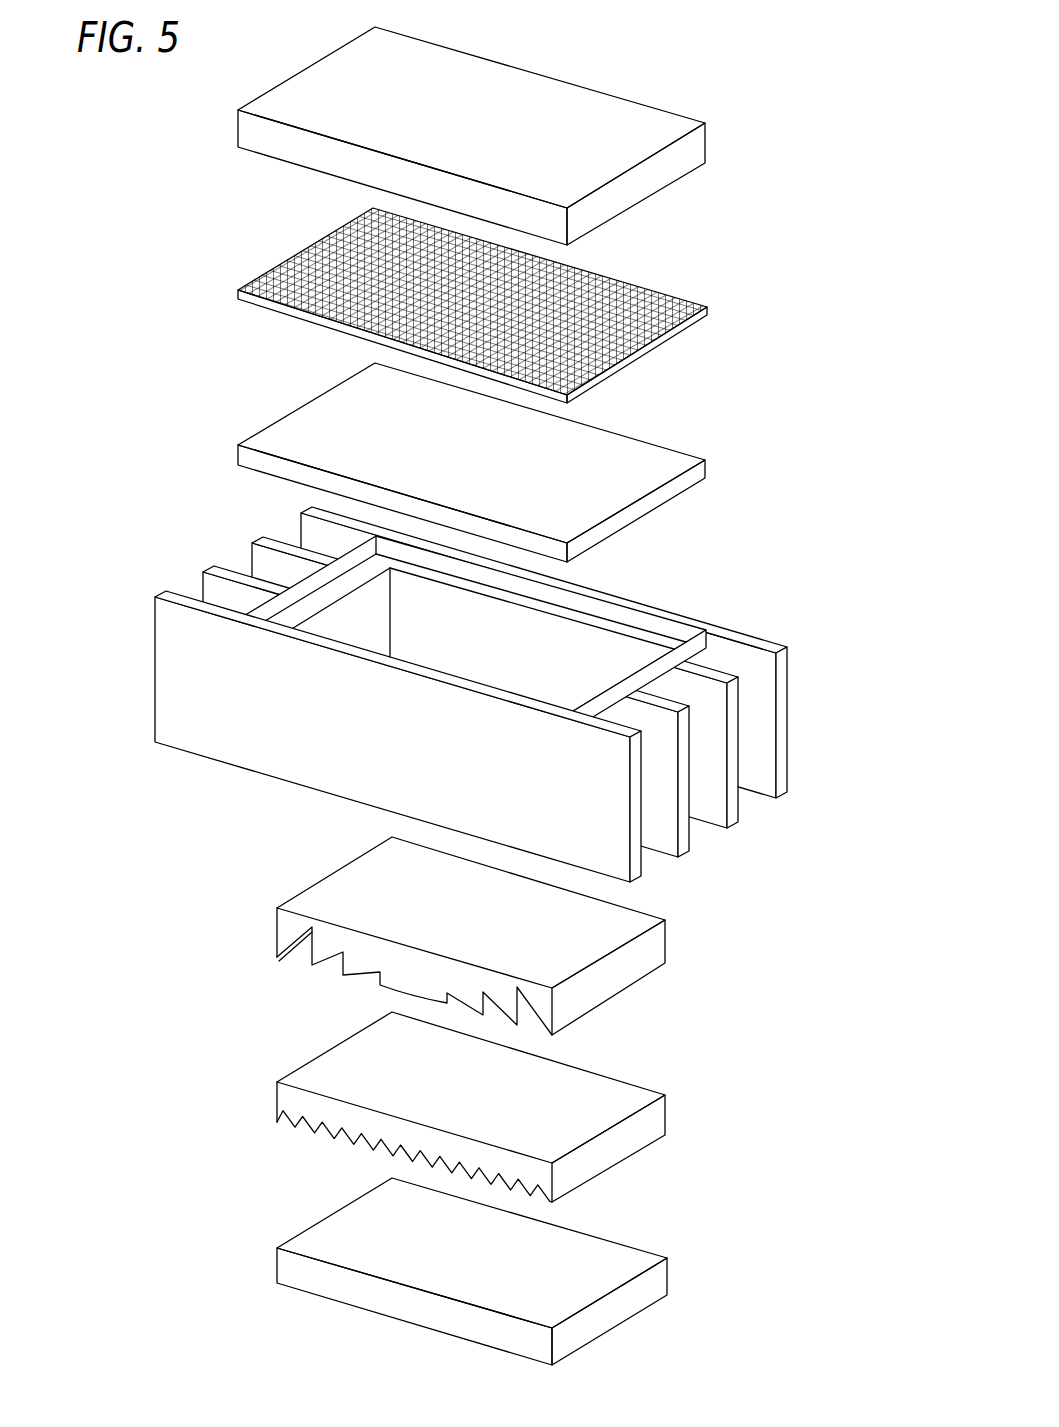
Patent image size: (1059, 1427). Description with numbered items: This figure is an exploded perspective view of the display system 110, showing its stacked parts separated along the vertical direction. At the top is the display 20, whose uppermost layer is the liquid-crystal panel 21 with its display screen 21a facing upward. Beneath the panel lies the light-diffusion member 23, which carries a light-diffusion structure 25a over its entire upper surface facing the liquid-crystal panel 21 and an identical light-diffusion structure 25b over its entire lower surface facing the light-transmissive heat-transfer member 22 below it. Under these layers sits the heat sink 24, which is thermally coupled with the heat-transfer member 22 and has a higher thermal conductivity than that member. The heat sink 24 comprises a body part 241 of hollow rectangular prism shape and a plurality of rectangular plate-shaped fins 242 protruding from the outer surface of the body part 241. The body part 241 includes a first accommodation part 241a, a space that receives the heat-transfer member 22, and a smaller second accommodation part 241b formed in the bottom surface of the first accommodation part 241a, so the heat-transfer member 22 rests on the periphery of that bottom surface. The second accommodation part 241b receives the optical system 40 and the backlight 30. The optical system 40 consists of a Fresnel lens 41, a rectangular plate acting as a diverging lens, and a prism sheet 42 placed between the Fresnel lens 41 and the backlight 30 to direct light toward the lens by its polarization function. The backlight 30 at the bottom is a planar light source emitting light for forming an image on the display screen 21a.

The display system 110 is at (156, 330).
The display 20 is at (767, 153).
The liquid-crystal panel 21 is at (685, 158).
The display screen 21a is at (567, 112).
The heat-transfer member 22 is at (690, 458).
The light-diffusion member 23 is at (687, 327).
The heat sink 24 is at (713, 628).
The light-diffusion structure 25a is at (617, 303).
The light-diffusion structure 25b is at (602, 377).
The body part 241 is at (678, 628).
The first accommodation part 241a is at (560, 600).
The second accommodation part 241b is at (452, 655).
The fins 242 is at (762, 740).
The backlight 30 is at (650, 1283).
The optical system 40 is at (717, 983).
The Fresnel lens 41 is at (653, 960).
The prism sheet 42 is at (660, 1090).